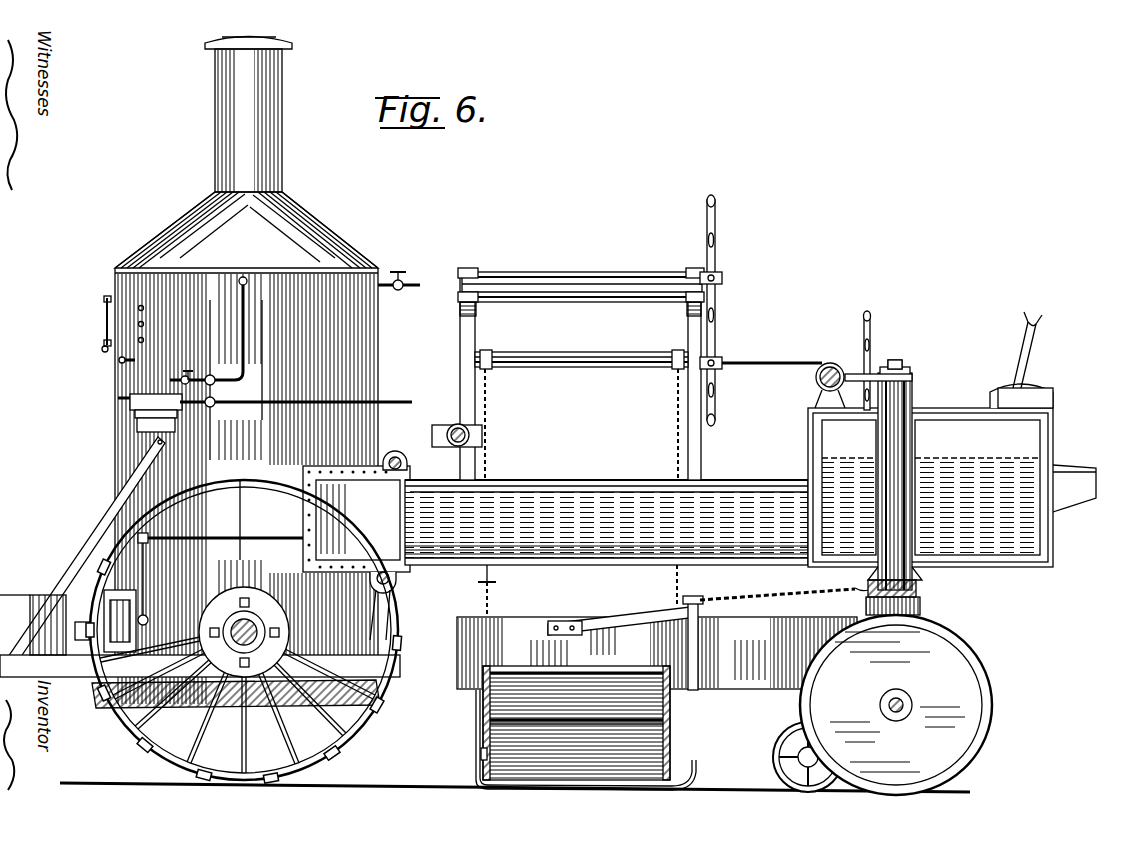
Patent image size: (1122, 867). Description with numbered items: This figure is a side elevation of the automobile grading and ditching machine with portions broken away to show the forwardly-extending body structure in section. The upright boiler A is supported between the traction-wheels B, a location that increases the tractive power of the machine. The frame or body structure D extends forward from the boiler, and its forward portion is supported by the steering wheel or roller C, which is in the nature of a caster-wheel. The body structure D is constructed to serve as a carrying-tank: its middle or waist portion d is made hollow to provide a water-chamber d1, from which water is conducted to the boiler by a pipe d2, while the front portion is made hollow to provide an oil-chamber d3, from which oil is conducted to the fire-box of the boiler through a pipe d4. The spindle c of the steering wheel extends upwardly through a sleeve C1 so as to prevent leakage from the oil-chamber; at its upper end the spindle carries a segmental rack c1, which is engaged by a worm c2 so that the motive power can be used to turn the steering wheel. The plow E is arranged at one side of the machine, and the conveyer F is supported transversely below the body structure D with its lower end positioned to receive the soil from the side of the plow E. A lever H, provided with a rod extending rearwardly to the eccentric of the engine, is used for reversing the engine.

The upright boiler A is at (213, 371).
The traction-wheels B is at (95, 593).
The steering wheel or roller C is at (970, 680).
The sleeve C1 is at (905, 520).
The spindle of the steering-wheel c is at (896, 371).
The segmental rack c1 is at (870, 374).
The worm c2 is at (832, 364).
The frame or body structure D is at (746, 480).
The middle or waist portion d is at (601, 480).
The water-chamber d1 is at (543, 520).
The pipe d2 is at (386, 402).
The oil-chamber d3 is at (946, 440).
The pipe d4 is at (226, 538).
The plow E is at (697, 783).
The conveyer F is at (615, 722).
The lever H is at (1020, 375).